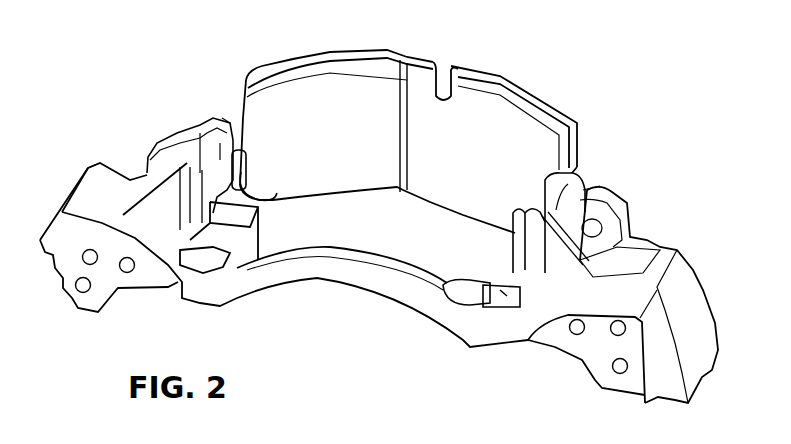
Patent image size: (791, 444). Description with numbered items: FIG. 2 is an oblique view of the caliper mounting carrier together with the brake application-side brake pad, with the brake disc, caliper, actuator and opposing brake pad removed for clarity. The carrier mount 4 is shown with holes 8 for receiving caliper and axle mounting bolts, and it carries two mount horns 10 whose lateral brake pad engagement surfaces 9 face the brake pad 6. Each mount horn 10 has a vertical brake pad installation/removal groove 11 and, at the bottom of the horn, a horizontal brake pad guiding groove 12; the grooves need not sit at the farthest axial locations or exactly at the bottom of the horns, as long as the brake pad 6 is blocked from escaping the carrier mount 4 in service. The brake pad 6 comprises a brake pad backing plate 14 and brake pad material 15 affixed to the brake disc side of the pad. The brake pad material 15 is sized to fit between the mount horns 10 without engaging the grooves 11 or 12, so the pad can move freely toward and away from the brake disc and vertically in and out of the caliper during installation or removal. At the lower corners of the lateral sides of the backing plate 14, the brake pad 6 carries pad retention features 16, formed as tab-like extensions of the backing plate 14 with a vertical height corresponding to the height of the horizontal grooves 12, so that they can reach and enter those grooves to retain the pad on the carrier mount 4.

The carrier mount 4 is at (697, 283).
The brake pad 6 is at (551, 98).
The holes 8 is at (612, 338).
The lateral brake pad engagement surfaces 9 is at (200, 122).
The mount horns 10 is at (90, 164).
The vertical brake pad installation/removal groove 11 is at (168, 187).
The horizontal brake pad guiding groove 12 is at (246, 157).
The brake pad backing plate 14 is at (316, 54).
The brake pad material 15 is at (478, 108).
The pad retention features 16 is at (275, 200).